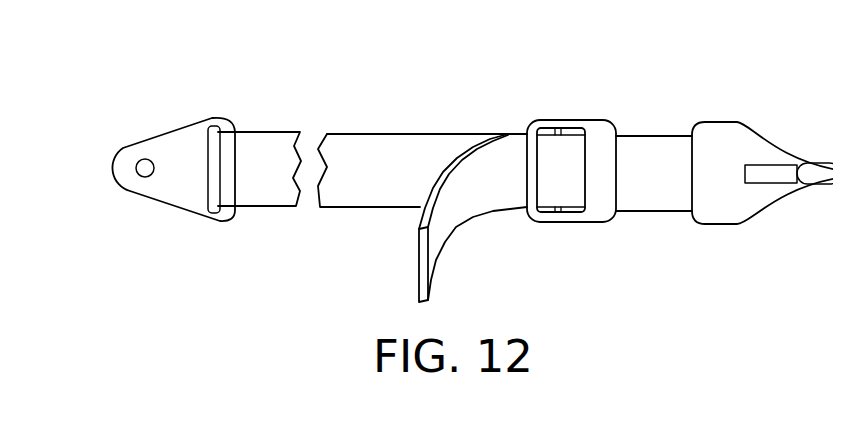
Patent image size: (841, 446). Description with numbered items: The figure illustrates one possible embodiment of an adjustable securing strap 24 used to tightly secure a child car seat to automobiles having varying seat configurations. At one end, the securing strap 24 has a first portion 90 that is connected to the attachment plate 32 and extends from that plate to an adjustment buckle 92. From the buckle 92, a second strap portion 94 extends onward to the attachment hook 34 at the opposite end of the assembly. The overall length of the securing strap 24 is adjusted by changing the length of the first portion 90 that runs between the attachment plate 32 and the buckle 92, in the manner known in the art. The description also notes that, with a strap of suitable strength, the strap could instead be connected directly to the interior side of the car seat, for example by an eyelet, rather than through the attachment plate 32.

The securing strap 24 is at (472, 155).
The attachment plate 32 is at (161, 124).
The first portion 90 is at (258, 124).
The adjustment buckle 92 is at (560, 112).
The second strap portion 94 is at (642, 128).
The attachment hook 34 is at (718, 114).